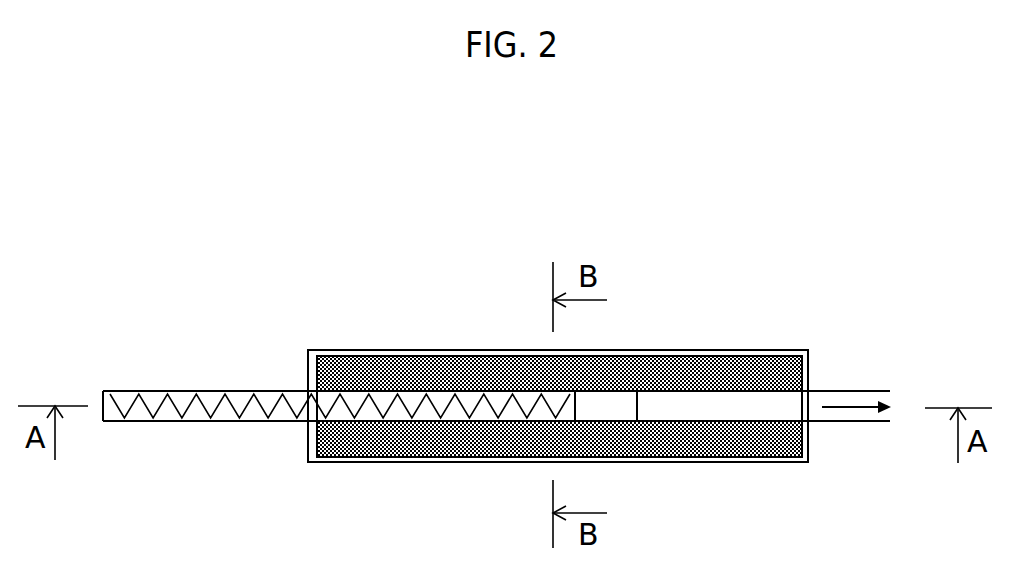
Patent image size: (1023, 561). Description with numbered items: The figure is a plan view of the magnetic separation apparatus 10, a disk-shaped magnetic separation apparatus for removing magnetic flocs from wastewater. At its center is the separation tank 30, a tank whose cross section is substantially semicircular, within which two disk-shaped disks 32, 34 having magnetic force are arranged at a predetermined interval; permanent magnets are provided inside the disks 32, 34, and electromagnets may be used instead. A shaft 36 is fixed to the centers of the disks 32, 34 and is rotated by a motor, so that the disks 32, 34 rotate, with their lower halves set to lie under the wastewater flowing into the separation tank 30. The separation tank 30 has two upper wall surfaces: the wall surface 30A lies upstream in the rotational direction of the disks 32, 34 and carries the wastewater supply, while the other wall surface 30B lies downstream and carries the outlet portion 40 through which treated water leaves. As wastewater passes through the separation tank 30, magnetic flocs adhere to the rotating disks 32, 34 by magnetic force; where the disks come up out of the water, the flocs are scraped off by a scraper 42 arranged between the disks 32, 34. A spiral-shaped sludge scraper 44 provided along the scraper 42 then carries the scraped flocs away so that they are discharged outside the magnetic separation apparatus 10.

The magnetic separation apparatus 10 is at (776, 306).
The separation tank 30 is at (814, 361).
The wall surface 30A is at (307, 442).
The wall surface 30B is at (810, 443).
The disk 32 is at (705, 445).
The disk 34 is at (713, 366).
The shaft 36 is at (600, 404).
The outlet portion 40 is at (866, 423).
The scraper 42 is at (228, 421).
The sludge scraper 44 is at (173, 391).